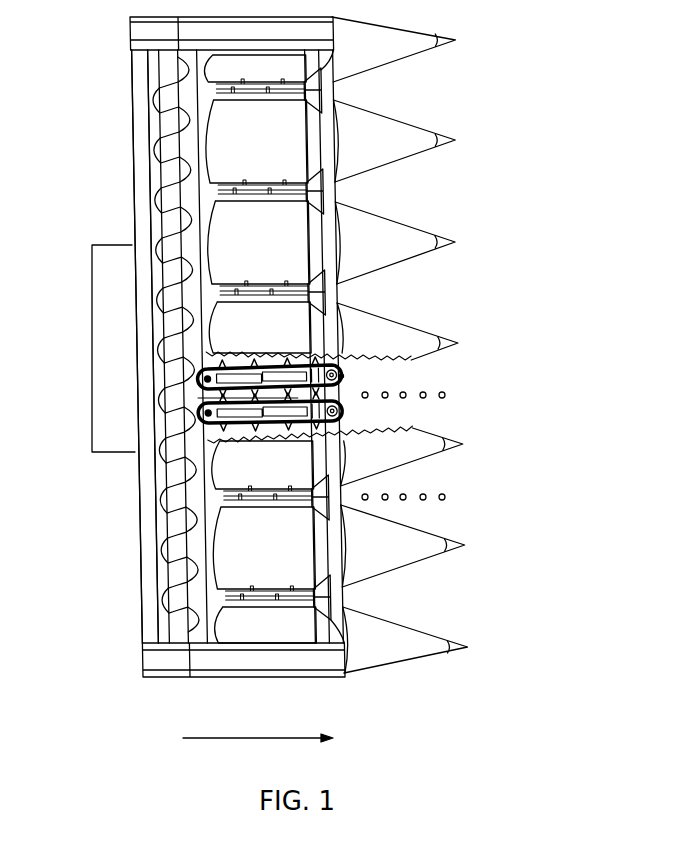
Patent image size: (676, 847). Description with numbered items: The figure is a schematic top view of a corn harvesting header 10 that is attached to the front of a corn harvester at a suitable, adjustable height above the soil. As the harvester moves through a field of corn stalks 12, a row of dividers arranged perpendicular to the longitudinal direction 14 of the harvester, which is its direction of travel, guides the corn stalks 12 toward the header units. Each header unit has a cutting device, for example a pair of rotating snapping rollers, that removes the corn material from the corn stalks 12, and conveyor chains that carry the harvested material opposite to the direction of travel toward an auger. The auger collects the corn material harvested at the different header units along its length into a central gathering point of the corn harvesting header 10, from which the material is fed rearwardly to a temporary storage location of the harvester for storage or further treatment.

The corn harvesting header 10 is at (329, 347).
The corn stalks 12 is at (445, 495).
The longitudinal direction 14 is at (258, 724).